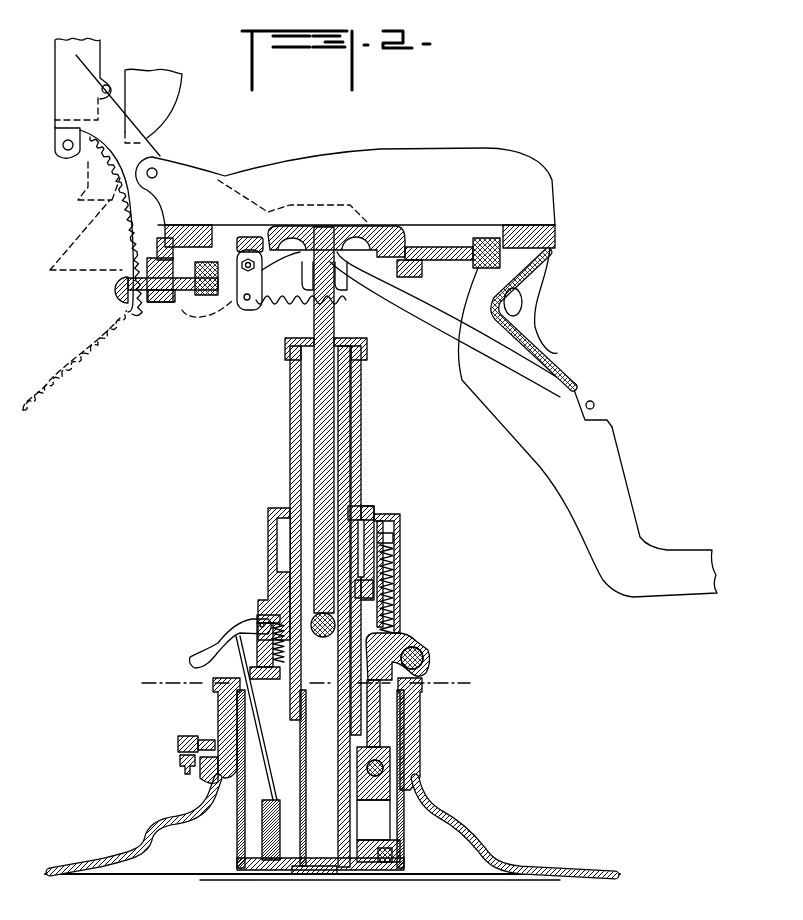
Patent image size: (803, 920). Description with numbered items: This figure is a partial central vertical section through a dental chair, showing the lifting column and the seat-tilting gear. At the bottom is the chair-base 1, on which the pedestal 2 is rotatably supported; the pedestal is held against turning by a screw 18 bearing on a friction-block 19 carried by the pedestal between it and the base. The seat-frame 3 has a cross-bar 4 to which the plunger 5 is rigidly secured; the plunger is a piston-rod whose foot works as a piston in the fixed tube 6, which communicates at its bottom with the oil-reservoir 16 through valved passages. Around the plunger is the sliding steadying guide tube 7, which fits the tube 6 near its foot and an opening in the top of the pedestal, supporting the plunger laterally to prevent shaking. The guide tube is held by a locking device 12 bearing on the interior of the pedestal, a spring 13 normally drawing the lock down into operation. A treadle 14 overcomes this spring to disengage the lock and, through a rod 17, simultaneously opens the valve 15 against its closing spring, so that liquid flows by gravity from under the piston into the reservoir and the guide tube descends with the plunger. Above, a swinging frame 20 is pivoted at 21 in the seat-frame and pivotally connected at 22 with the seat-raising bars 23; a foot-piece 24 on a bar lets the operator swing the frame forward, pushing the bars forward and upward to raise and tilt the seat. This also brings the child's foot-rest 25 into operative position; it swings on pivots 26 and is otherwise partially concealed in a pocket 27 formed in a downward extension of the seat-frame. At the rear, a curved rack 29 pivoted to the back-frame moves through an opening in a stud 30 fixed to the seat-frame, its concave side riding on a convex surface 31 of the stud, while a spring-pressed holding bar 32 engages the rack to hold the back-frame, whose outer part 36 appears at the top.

The chair-base 1 is at (148, 845).
The pedestal 2 is at (214, 701).
The seat-frame 3 is at (163, 233).
The cross-bar 4 is at (306, 226).
The plunger 5 is at (330, 398).
The fixed tube 6 is at (366, 349).
The sliding steadying guide tube 7 is at (351, 462).
The locking device 12 is at (268, 532).
The spring 13 is at (256, 620).
The treadle 14 is at (236, 636).
The valve 15 is at (276, 803).
The oil-reservoir 16 is at (420, 840).
The rod 17 is at (258, 718).
The screw 18 is at (178, 745).
The friction-block 19 is at (206, 770).
The swinging frame 20 is at (250, 236).
The pivot 21 is at (241, 264).
The pivotal connection 22 is at (247, 301).
The seat-raising bars 23 is at (420, 318).
The foot-piece 24 is at (198, 312).
The child's foot-rest 25 is at (524, 302).
The pivots 26 is at (157, 168).
The pocket 27 is at (503, 300).
The curved rack 29 is at (92, 158).
The stud 30 is at (120, 300).
The convex surface 31 is at (114, 286).
The holding bar 32 is at (162, 306).
The outer part of back-frame 36 is at (65, 76).